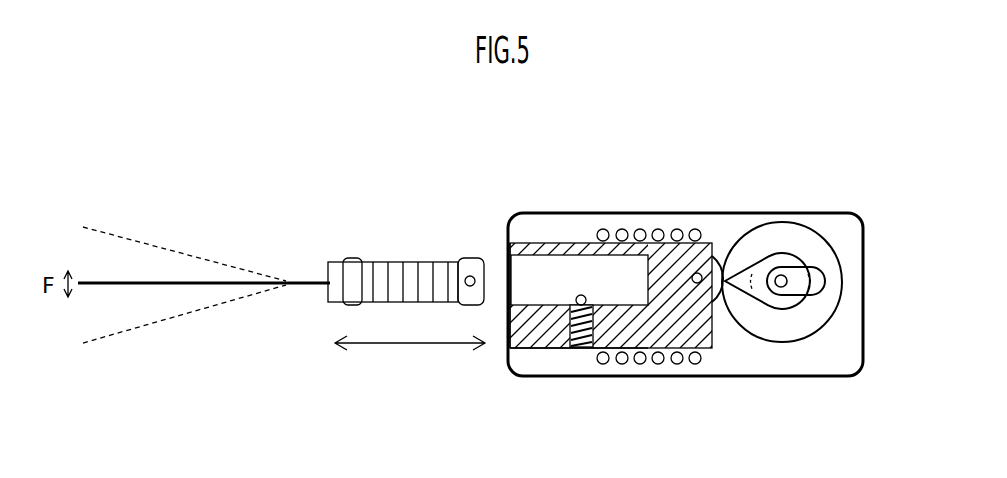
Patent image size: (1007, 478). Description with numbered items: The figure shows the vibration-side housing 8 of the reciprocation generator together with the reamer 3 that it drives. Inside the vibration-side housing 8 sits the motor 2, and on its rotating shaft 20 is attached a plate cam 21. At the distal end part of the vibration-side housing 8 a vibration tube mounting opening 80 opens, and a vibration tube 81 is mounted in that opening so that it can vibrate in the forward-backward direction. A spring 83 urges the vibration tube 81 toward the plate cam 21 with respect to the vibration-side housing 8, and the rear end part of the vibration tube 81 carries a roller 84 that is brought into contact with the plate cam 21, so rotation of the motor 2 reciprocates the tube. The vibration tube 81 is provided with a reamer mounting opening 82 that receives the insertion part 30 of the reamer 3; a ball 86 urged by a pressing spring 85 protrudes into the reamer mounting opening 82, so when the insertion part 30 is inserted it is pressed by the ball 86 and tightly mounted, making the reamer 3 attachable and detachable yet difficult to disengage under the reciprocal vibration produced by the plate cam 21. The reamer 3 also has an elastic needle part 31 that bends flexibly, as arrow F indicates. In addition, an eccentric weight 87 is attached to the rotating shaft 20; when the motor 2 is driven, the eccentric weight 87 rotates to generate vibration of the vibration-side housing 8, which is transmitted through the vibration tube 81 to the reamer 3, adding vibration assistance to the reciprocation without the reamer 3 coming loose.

The motor 2 is at (842, 275).
The reamer 3 is at (300, 230).
The vibration-side housing 8 is at (720, 231).
The rotating shaft 20 is at (785, 272).
The plate cam 21 is at (797, 303).
The insertion part 30 is at (397, 277).
The needle part 31 is at (195, 282).
The vibration tube mounting opening 80 is at (523, 243).
The vibration tube 81 is at (525, 328).
The reamer mounting opening 82 is at (507, 253).
The spring 83 is at (657, 364).
The roller 84 is at (729, 303).
The pressing spring 85 is at (581, 348).
The ball 86 is at (582, 295).
The eccentric weight 87 is at (818, 284).